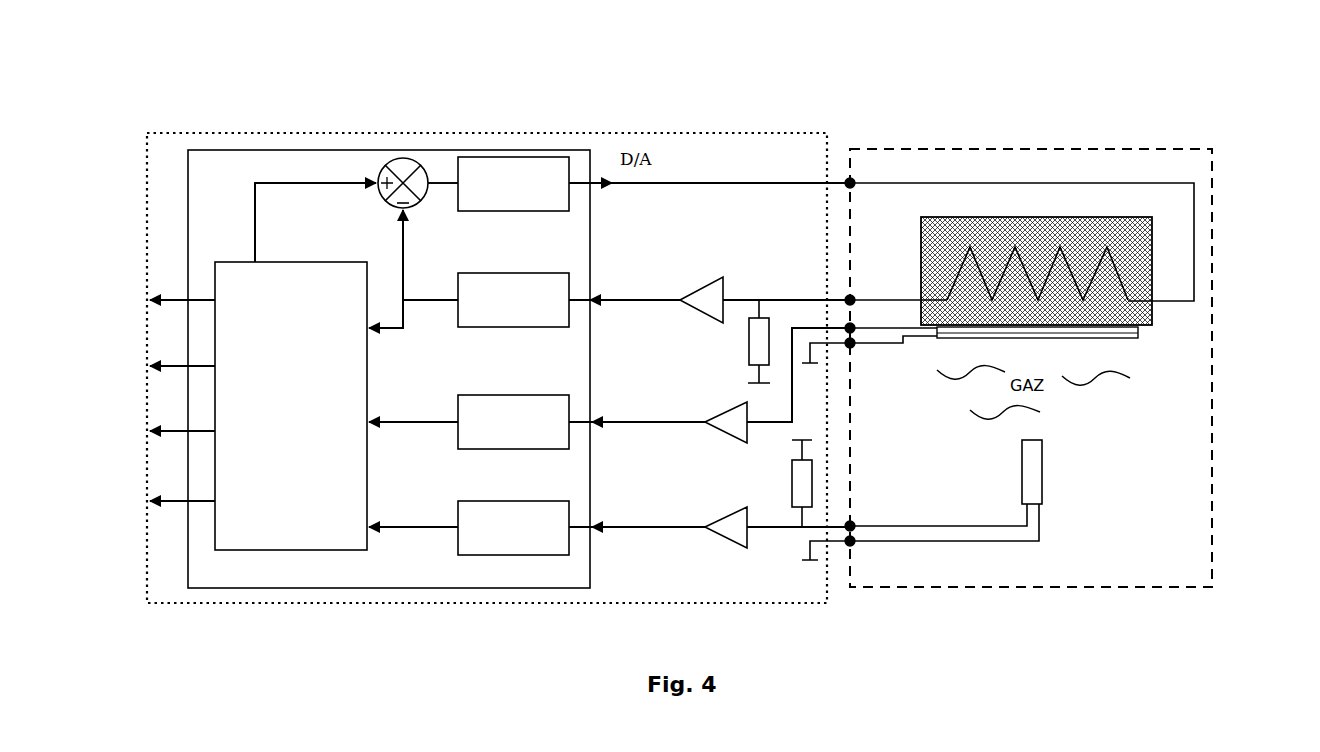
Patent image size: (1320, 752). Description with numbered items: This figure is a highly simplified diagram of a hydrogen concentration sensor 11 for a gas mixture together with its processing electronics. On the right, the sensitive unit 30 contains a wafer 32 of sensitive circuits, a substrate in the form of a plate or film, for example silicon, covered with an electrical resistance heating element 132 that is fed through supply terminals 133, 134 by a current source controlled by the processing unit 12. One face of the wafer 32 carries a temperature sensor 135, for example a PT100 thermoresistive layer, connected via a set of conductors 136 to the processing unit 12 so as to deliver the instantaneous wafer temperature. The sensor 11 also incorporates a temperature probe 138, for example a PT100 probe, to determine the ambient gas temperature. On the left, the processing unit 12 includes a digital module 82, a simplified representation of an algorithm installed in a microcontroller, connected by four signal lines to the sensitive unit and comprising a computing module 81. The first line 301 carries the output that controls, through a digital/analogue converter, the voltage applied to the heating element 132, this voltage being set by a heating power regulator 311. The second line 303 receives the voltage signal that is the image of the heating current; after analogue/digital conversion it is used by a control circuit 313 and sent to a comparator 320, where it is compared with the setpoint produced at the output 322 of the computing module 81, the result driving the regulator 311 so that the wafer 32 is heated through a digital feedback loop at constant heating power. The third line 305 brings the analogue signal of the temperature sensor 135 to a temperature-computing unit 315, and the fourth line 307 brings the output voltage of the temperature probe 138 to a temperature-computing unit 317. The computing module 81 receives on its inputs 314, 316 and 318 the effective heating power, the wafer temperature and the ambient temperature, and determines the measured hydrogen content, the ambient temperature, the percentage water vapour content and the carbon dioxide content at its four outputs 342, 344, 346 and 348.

The hydrogen concentration sensor 11 is at (858, 130).
The processing unit 12 is at (613, 130).
The sensitive unit 30 is at (1052, 147).
The wafer of sensitive circuits 32 is at (1133, 248).
The computing module 81 is at (227, 552).
The digital module 82 is at (187, 182).
The electrical resistance heating element 132 is at (1123, 278).
The supply terminal 133 is at (1152, 303).
The supply terminal 134 is at (921, 300).
The temperature sensor 135 is at (1130, 338).
The set of conductors 136 is at (878, 332).
The temperature probe 138 is at (1030, 477).
The first line 301 is at (849, 181).
The second line 303 is at (845, 297).
The third line 305 is at (837, 346).
The fourth line 307 is at (837, 532).
The heating power regulator 311 is at (457, 180).
The control circuit 313 is at (569, 290).
The input of computing module 314 is at (388, 330).
The temperature-computing unit 315 is at (581, 419).
The input of computing module 316 is at (387, 422).
The temperature-computing unit 317 is at (581, 526).
The input of computing module 318 is at (390, 527).
The comparator 320 is at (400, 156).
The setpoint output 322 is at (255, 262).
The hydrogen content output 342 is at (212, 300).
The ambient temperature output 344 is at (212, 366).
The water vapour content output 346 is at (212, 431).
The carbon dioxide content output 348 is at (212, 501).